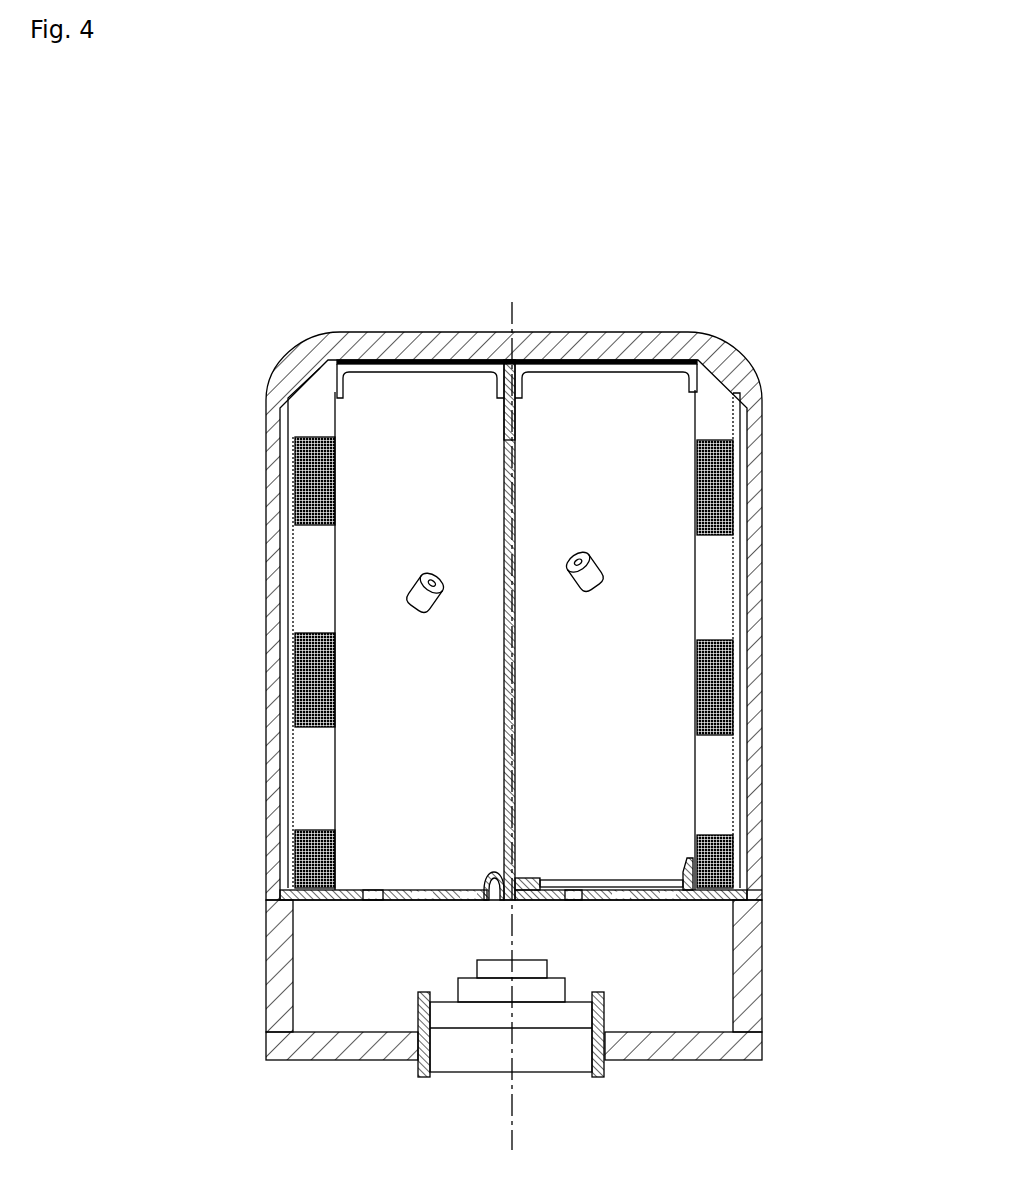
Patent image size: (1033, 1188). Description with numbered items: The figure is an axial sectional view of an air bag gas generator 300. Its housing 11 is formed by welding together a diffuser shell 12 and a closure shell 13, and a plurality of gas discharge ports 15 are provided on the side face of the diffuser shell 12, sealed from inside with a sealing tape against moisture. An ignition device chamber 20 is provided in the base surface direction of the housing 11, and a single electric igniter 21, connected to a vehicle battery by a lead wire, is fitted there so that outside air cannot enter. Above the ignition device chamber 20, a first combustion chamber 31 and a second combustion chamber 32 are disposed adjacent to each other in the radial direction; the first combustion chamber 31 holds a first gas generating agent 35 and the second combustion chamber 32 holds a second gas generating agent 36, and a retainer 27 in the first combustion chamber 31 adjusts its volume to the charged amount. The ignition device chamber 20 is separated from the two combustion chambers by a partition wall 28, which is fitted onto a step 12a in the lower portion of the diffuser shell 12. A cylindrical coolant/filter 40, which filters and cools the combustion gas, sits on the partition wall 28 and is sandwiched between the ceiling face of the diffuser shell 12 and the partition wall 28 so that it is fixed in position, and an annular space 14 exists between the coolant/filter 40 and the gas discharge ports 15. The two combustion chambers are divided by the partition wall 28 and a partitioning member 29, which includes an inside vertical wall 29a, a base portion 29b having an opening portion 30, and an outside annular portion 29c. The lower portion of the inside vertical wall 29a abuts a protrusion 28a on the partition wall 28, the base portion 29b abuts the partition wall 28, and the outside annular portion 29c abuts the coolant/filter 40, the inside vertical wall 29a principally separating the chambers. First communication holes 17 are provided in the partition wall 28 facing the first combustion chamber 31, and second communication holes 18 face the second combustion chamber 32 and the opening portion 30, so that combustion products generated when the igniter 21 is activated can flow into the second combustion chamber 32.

The air bag gas generator 300 is at (452, 288).
The housing 11 is at (609, 959).
The diffuser shell 12 is at (762, 980).
The step 12a is at (752, 870).
The closure shell 13 is at (725, 1060).
The annular space 14 is at (285, 865).
The gas discharge ports 15 is at (763, 512).
The first communication holes 17 is at (370, 900).
The second communication holes 18 is at (573, 900).
The ignition device chamber 20 is at (691, 1010).
The electric igniter 21 is at (467, 1045).
The retainer 27 is at (592, 380).
The partition wall 28 is at (320, 900).
The protrusion 28a is at (490, 882).
The partitioning member 29 is at (498, 737).
The inside vertical wall 29a is at (517, 438).
The base portion 29b is at (524, 880).
The outside annular portion 29c is at (683, 876).
The opening portion 30 is at (601, 879).
The first combustion chamber 31 is at (441, 715).
The second combustion chamber 32 is at (626, 730).
The first gas generating agent 35 is at (425, 592).
The second gas generating agent 36 is at (600, 578).
The coolant/filter 40 is at (712, 762).